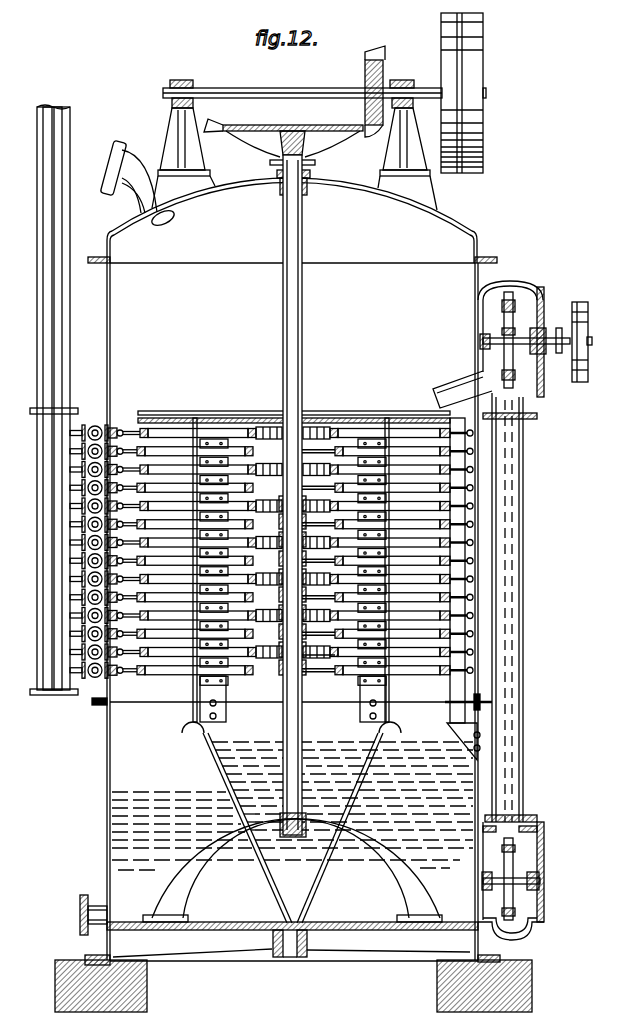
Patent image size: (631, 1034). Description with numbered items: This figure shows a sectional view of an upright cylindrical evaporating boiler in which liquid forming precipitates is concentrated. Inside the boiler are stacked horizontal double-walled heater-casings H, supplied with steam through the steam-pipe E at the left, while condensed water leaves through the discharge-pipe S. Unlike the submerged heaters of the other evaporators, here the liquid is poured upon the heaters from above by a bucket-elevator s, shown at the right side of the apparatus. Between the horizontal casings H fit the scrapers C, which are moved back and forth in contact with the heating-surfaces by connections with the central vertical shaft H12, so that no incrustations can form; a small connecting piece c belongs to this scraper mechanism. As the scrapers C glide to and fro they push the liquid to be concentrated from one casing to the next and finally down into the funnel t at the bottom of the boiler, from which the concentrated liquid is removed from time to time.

The steam-pipe E is at (46, 400).
The heaters H is at (271, 555).
The shaft H12 is at (300, 356).
The scrapers C is at (294, 585).
The plate connecting rod c is at (353, 662).
The discharge-pipe for condensed water S is at (464, 589).
The bucket-elevator s is at (512, 610).
The funnel t is at (292, 822).